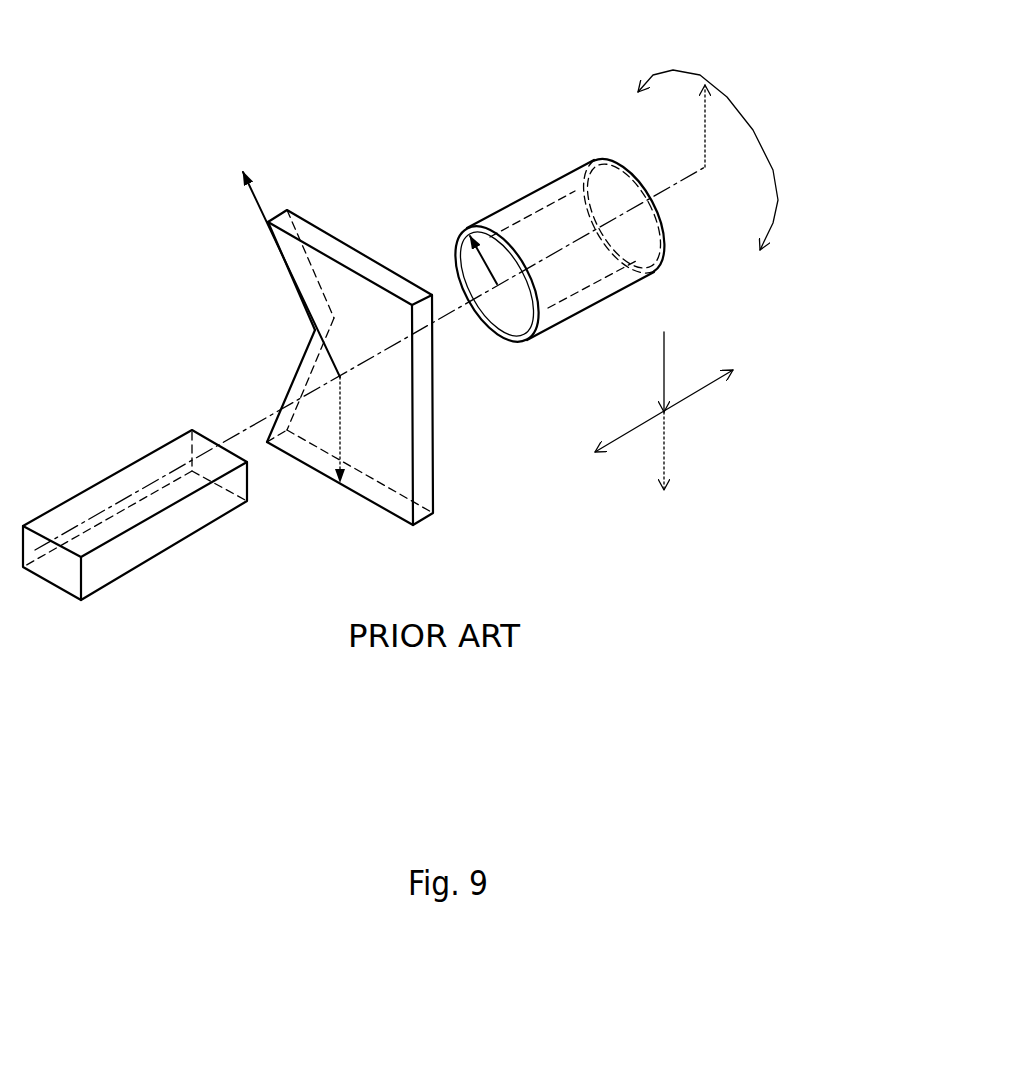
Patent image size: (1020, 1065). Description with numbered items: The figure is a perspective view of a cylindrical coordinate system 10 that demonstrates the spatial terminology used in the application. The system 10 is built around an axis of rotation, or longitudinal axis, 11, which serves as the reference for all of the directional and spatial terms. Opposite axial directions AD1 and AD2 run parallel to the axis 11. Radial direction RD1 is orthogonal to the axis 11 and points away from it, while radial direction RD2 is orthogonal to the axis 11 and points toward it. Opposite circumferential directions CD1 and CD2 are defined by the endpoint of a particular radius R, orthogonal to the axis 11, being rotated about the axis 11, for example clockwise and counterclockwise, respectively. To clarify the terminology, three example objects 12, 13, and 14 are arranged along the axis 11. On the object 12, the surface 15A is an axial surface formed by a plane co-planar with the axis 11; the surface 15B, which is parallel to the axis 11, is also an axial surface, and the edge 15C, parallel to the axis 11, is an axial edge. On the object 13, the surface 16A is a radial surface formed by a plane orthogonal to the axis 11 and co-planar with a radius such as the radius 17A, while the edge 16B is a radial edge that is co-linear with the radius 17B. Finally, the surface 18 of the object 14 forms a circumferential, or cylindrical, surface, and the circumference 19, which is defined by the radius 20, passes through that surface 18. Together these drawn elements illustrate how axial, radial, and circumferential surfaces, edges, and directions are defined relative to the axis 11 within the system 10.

The cylindrical coordinate system 10 is at (223, 292).
The axis of rotation 11 is at (648, 202).
The object 12 is at (107, 592).
The object 13 is at (443, 517).
The object 14 is at (582, 312).
The axial surface 15A is at (103, 497).
The axial surface 15B is at (152, 545).
The axial edge 15C is at (128, 462).
The radial surface 16A is at (345, 283).
The radial edge 16B is at (297, 280).
The radius 17A is at (340, 423).
The radius 17B is at (258, 203).
The circumferential surface 18 is at (528, 195).
The circumference 19 is at (460, 250).
The radius 20 is at (470, 237).
The radius R is at (705, 120).
The circumferential direction CD1 is at (778, 217).
The circumferential direction CD2 is at (670, 70).
The radial direction RD1 is at (664, 460).
The radial direction RD2 is at (664, 348).
The axial direction AD1 is at (692, 388).
The axial direction AD2 is at (630, 430).